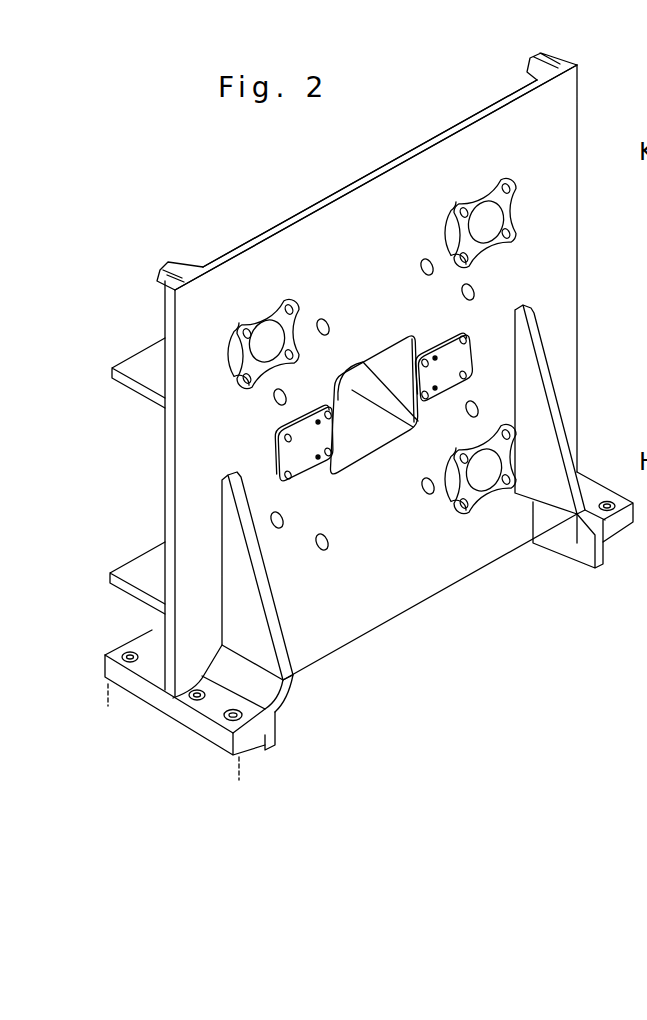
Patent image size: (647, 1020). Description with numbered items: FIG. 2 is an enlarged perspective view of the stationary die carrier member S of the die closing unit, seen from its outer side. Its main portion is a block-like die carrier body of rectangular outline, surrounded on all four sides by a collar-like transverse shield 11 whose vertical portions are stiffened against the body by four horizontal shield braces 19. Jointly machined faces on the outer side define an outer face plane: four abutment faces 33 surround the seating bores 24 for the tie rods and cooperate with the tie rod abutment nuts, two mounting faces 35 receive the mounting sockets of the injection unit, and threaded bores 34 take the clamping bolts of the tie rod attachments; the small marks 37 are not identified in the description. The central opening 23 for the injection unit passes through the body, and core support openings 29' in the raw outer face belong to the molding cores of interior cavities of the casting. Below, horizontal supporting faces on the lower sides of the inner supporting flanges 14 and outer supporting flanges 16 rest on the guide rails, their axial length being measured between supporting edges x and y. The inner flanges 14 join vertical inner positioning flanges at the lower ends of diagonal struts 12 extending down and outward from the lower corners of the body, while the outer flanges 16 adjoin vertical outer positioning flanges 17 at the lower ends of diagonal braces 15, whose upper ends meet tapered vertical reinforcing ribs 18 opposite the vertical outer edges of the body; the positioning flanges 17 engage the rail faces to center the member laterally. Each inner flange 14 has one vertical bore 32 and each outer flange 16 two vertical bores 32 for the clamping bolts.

The transverse shield 11 is at (547, 131).
The diagonal struts 12 is at (155, 632).
The inner supporting flanges 14 is at (137, 690).
The diagonal braces 15 is at (284, 692).
The outer supporting flanges 16 is at (266, 745).
The outer positioning flanges 17 is at (270, 758).
The tapered vertical reinforcing ribs 18 is at (282, 650).
The horizontal shield braces 19 is at (153, 362).
The central opening 23 is at (367, 427).
The seating bores 24 is at (491, 220).
The core support openings 29' is at (450, 403).
The vertical bores 32 is at (123, 655).
The abutment faces 33 is at (263, 318).
The threaded bores 34 is at (288, 309).
The mounting faces 35 is at (297, 450).
The dowel pin 37 is at (318, 419).
The stationary die carrier member S is at (278, 219).
The supporting edge x is at (106, 706).
The supporting edge y is at (236, 783).